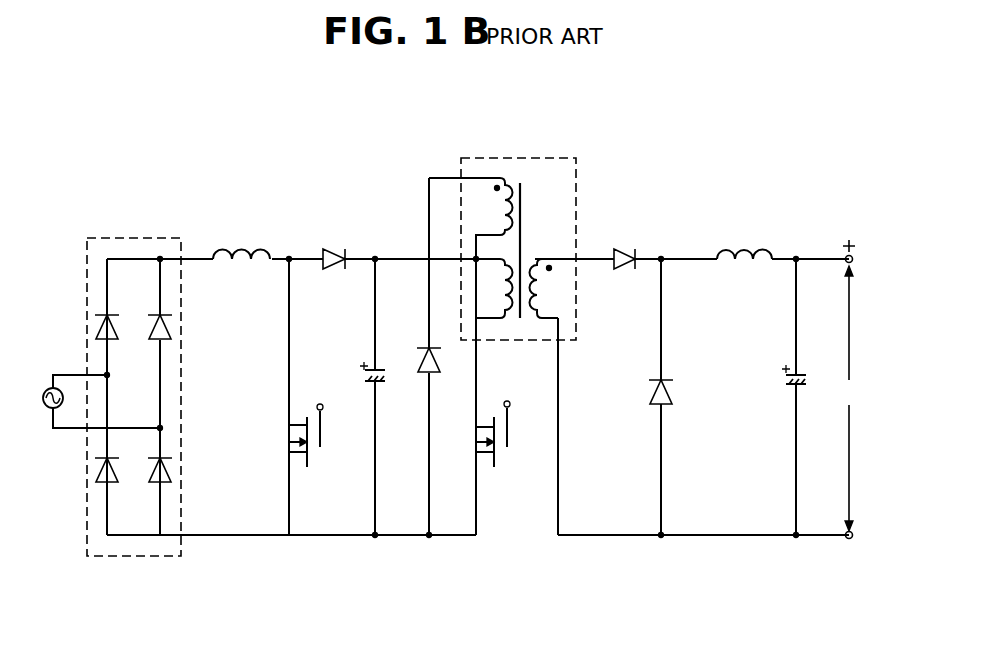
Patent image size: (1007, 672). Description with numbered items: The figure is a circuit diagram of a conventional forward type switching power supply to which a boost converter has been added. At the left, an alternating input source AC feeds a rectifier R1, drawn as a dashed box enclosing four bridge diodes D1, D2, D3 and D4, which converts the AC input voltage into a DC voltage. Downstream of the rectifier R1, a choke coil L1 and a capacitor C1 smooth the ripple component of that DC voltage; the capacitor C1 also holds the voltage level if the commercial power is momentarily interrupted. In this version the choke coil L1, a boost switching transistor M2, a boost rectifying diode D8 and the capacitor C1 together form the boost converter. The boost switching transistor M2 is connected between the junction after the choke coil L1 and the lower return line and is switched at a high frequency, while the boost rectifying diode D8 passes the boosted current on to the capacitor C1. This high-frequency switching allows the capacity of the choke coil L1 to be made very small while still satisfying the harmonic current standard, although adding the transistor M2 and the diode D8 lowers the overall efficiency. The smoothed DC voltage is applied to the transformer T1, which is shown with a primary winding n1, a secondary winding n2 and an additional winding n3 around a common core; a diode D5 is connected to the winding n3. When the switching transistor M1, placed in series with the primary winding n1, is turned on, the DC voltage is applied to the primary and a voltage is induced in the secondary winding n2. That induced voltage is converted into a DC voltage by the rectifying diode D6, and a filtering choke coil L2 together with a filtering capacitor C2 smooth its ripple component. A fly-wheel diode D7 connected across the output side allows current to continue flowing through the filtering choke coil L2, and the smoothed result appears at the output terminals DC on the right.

The rectifier R1 is at (134, 238).
The bridge diode D1 is at (98, 331).
The bridge diode D2 is at (165, 332).
The bridge diode D3 is at (97, 470).
The bridge diode D4 is at (166, 471).
The AC input source AC is at (60, 407).
The choke coil L1 is at (237, 250).
The boost rectifying diode D8 is at (336, 249).
The boost switching transistor M2 is at (284, 397).
The capacitor C1 is at (361, 397).
The diode D5 is at (412, 356).
The transformer T1 is at (502, 218).
The primary winding n1 is at (489, 288).
The secondary winding n2 is at (553, 288).
The auxiliary winding n3 is at (471, 218).
The switching transistor M1 is at (478, 434).
The rectifying diode D6 is at (621, 249).
The fly-wheel diode D7 is at (672, 392).
The filtering choke coil L2 is at (744, 235).
The filtering capacitor C2 is at (781, 397).
The DC output terminals DC is at (853, 389).